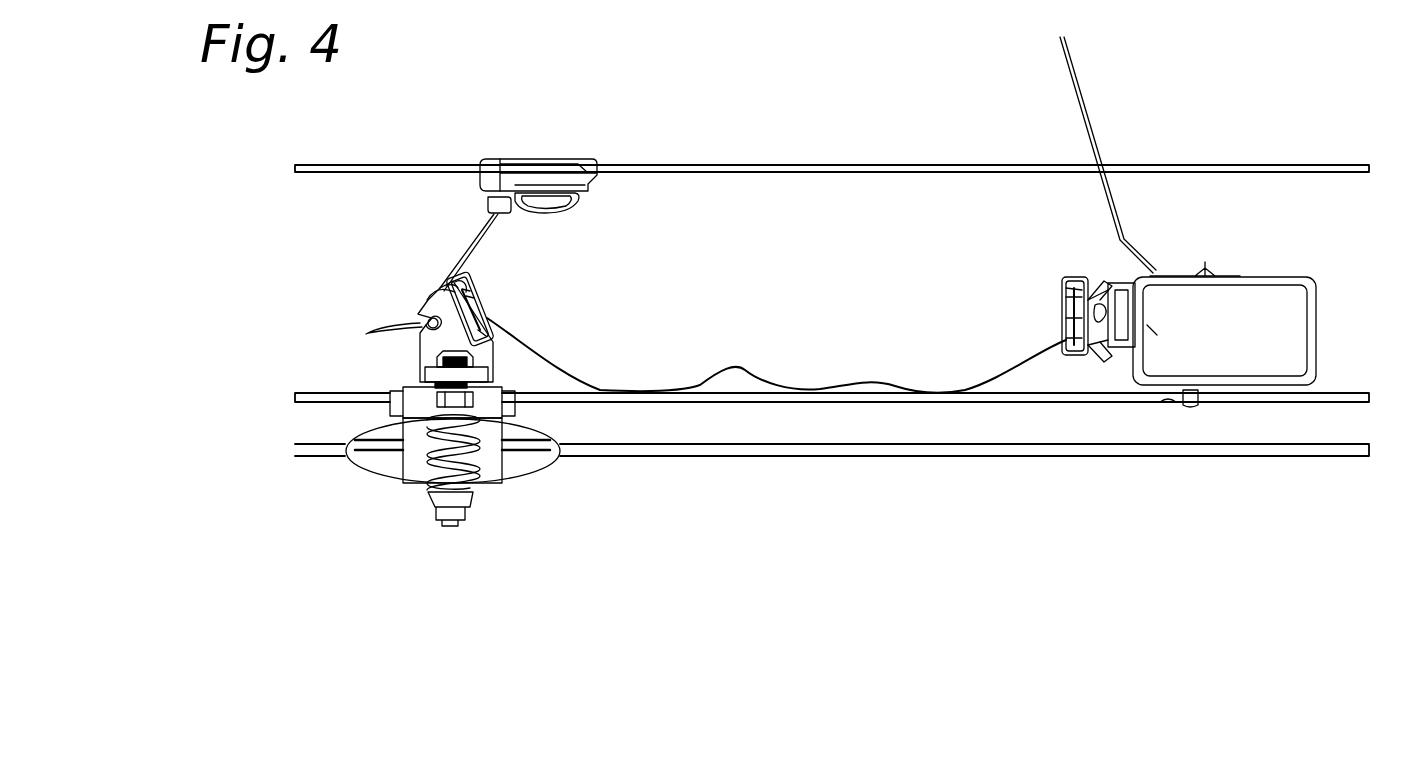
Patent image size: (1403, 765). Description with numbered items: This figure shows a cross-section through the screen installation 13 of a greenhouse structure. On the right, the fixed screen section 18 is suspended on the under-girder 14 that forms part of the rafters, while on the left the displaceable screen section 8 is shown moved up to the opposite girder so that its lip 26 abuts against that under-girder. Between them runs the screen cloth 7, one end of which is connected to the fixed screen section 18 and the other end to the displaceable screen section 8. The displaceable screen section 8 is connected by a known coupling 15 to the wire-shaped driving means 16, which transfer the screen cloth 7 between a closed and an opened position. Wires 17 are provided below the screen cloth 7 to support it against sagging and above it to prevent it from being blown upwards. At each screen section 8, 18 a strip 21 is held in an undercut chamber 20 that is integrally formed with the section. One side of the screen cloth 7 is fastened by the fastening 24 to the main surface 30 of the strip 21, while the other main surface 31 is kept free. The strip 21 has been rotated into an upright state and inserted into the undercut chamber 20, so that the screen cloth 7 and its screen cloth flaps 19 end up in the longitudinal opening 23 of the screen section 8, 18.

The screen cloth 7 is at (726, 368).
The screen section 8 is at (422, 297).
The screen installation 13 is at (860, 325).
The under-girder 14 is at (1316, 318).
The coupling 15 is at (502, 504).
The driving means 16 is at (833, 450).
The wire 17 is at (1226, 171).
The fixed screen section 18 is at (1103, 346).
The screen cloth flap 19 is at (482, 300).
The undercut chamber 20 is at (458, 282).
The strip 21 is at (495, 332).
The longitudinal opening 23 is at (488, 302).
The fastening 24 is at (484, 312).
The lip 26 is at (410, 323).
The main surface 30 is at (475, 290).
The main surface 31 is at (452, 290).